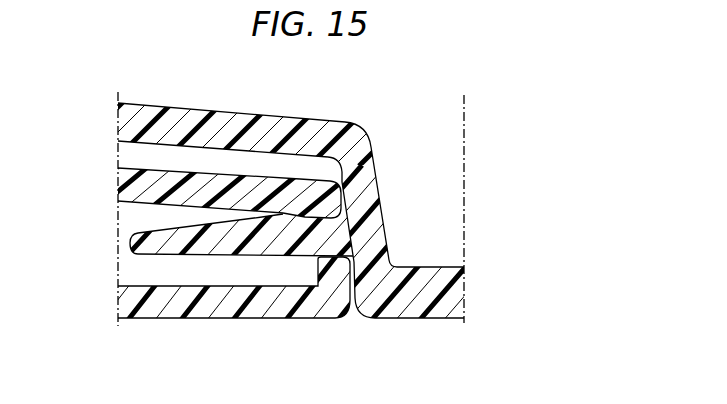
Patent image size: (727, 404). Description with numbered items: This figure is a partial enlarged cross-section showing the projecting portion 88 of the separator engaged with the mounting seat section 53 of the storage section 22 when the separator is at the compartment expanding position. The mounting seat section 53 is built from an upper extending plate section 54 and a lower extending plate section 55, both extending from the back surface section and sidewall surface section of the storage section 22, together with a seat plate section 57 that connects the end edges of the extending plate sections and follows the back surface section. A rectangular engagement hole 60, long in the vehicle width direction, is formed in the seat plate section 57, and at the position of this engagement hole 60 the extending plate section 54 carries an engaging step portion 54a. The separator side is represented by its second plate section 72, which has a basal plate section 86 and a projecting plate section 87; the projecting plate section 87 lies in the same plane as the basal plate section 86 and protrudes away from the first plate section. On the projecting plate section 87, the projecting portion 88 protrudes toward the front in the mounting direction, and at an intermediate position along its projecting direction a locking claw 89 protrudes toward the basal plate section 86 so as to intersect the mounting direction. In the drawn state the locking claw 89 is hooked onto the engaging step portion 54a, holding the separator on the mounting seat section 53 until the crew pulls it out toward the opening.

The storage section 22 is at (165, 331).
The mounting seat section 53 is at (379, 160).
The extending plate section 54 is at (210, 186).
The engaging step portion 54a is at (283, 214).
The extending plate section 55 is at (243, 314).
The seat plate section 57 is at (360, 276).
The engagement hole 60 is at (368, 228).
The second plate section 72 is at (358, 125).
The basal plate section 86 is at (172, 115).
The projecting plate section 87 is at (412, 309).
The projecting portion 88 is at (143, 246).
The locking claw 89 is at (283, 213).